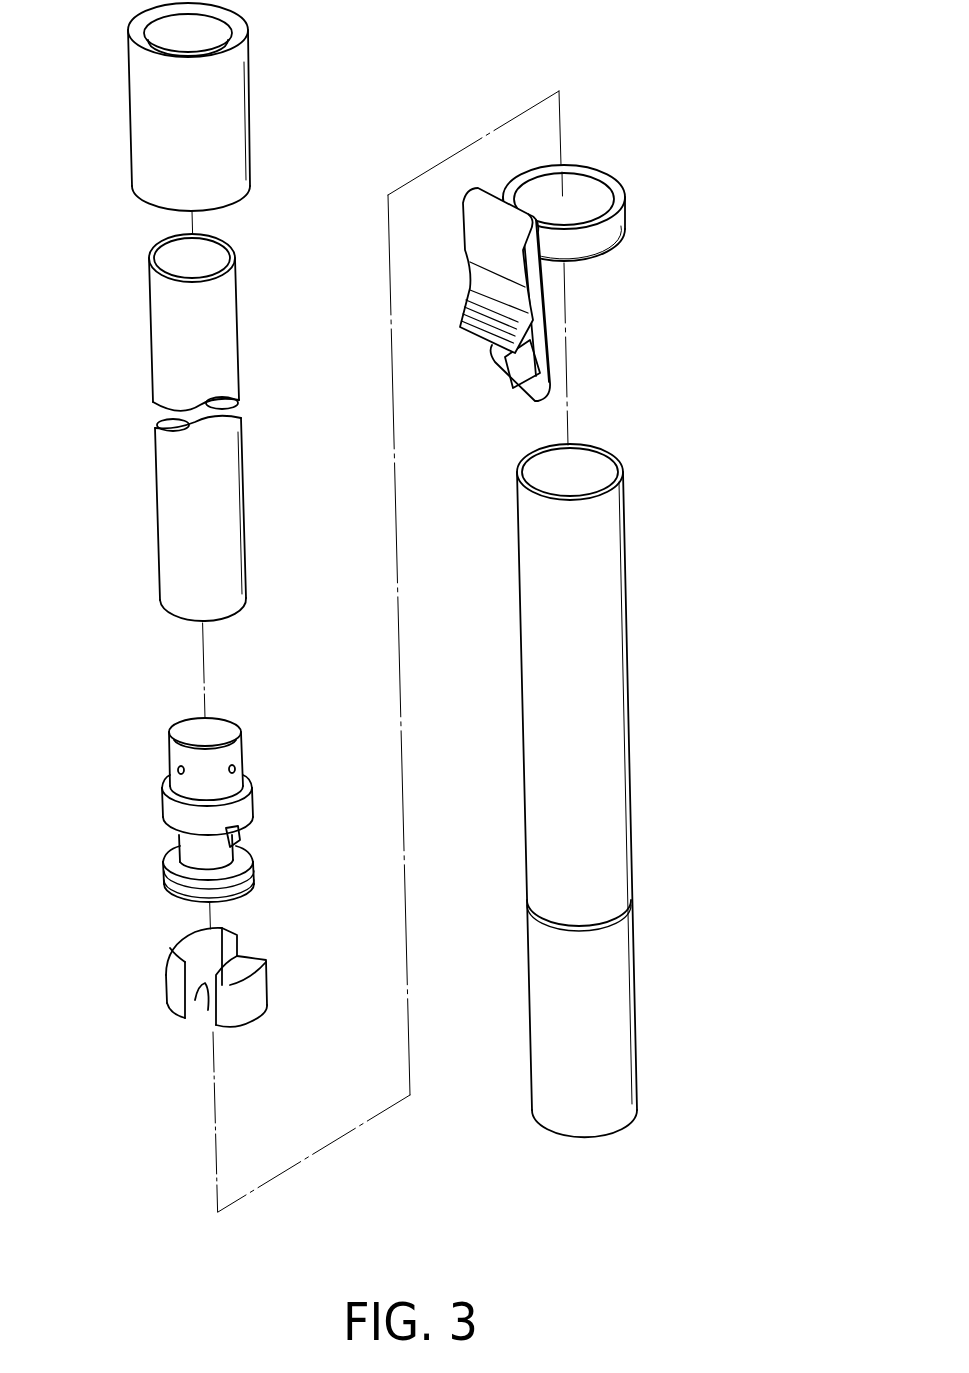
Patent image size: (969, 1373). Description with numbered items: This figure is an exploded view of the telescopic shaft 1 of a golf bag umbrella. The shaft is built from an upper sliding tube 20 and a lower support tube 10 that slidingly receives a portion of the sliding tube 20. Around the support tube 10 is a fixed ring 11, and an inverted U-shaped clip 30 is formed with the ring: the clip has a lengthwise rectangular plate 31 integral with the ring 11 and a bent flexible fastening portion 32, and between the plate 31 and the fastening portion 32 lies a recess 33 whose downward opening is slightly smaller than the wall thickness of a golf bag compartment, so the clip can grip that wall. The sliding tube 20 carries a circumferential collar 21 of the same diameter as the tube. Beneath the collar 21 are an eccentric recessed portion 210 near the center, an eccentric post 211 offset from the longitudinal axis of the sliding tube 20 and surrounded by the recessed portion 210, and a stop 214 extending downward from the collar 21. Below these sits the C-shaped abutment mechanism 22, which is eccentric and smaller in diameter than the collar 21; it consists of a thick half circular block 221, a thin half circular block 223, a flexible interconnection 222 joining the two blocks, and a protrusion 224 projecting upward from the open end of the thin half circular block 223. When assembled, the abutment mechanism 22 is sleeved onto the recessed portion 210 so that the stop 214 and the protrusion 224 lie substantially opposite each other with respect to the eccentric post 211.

The telescopic shaft 1 is at (648, 414).
The lower support tube 10 is at (605, 705).
The ring 11 is at (612, 223).
The upper sliding tube 20 is at (214, 352).
The circumferential collar 21 is at (207, 822).
The eccentric recessed portion 210 is at (195, 864).
The eccentric post 211 is at (192, 843).
The stop 214 is at (247, 832).
The C-shaped abutment mechanism 22 is at (241, 986).
The thick half circular block 221 is at (225, 928).
The flexible interconnection 222 is at (240, 956).
The thin half circular block 223 is at (255, 992).
The protrusion 224 is at (205, 1010).
The inverted U-shaped clip 30 is at (540, 296).
The lengthwise rectangular plate 31 is at (522, 380).
The bent flexible fastening portion 32 is at (483, 290).
The recess 33 is at (540, 318).